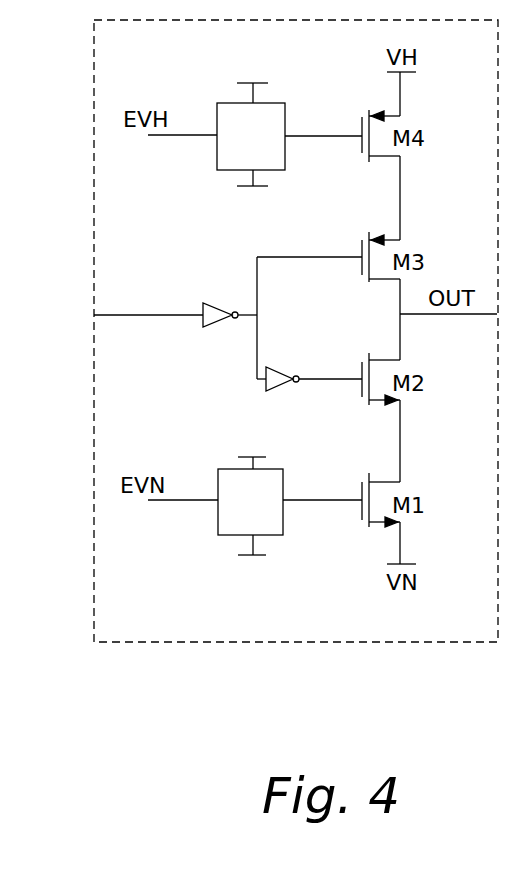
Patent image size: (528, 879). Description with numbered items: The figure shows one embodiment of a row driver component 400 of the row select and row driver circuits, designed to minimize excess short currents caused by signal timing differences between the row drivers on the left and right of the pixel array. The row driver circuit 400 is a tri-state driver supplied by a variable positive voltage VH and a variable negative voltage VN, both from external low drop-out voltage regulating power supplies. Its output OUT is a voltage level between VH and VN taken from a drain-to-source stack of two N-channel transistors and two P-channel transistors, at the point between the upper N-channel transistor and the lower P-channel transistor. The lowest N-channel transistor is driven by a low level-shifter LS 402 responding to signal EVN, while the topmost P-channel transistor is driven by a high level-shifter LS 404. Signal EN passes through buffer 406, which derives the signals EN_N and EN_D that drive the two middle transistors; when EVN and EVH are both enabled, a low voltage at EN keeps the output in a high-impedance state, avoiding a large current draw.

The row driver component 400 is at (161, 630).
The low level-shifter LS 402 is at (222, 482).
The high level-shifter LS 404 is at (220, 162).
The buffer 406 is at (228, 310).